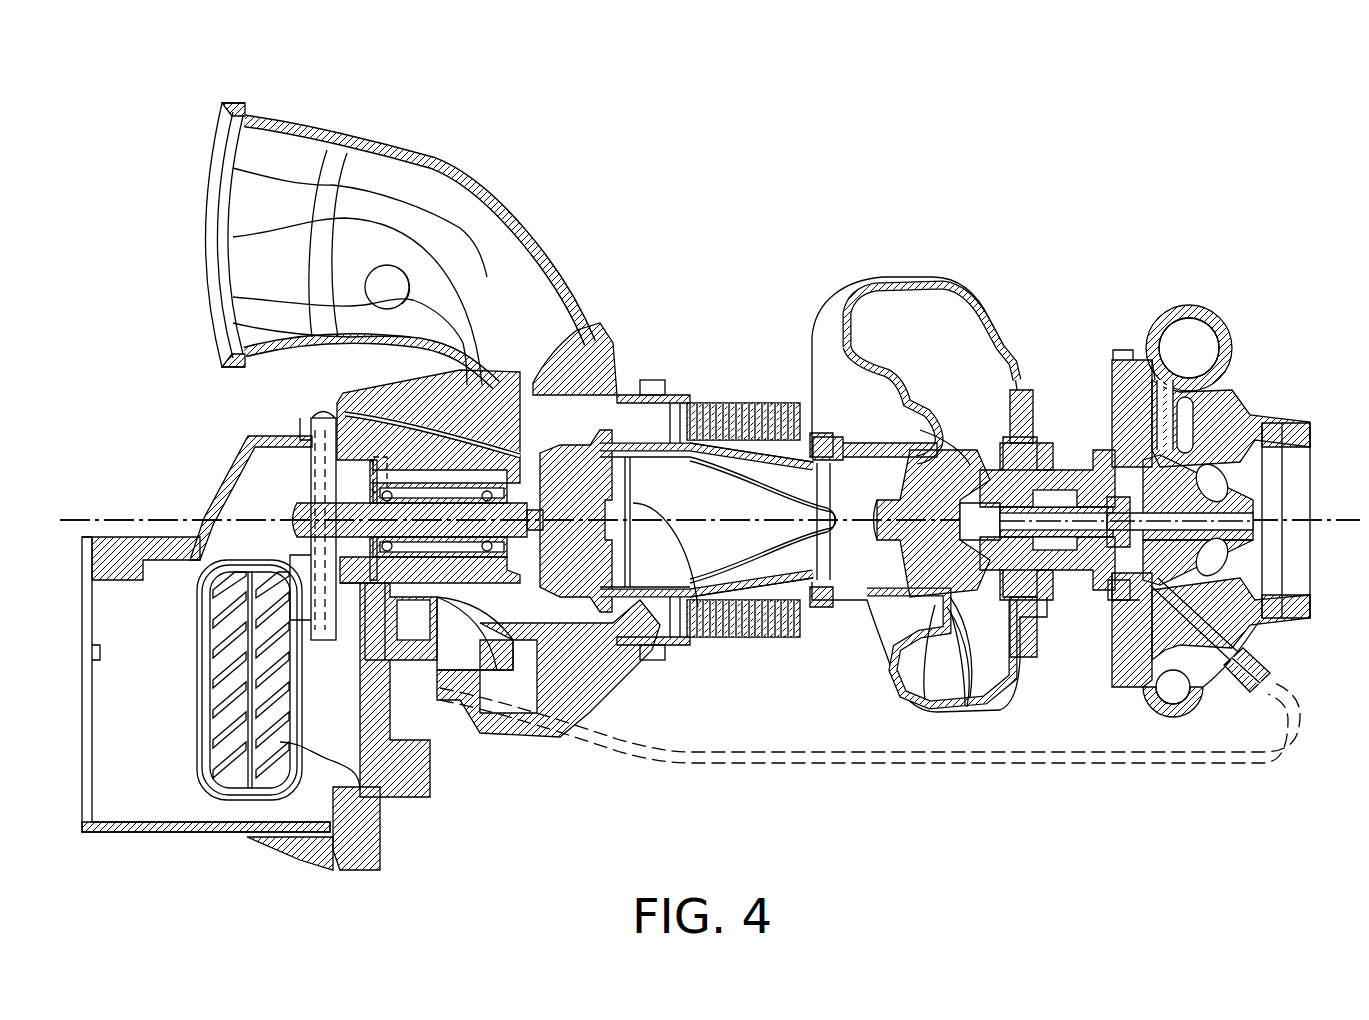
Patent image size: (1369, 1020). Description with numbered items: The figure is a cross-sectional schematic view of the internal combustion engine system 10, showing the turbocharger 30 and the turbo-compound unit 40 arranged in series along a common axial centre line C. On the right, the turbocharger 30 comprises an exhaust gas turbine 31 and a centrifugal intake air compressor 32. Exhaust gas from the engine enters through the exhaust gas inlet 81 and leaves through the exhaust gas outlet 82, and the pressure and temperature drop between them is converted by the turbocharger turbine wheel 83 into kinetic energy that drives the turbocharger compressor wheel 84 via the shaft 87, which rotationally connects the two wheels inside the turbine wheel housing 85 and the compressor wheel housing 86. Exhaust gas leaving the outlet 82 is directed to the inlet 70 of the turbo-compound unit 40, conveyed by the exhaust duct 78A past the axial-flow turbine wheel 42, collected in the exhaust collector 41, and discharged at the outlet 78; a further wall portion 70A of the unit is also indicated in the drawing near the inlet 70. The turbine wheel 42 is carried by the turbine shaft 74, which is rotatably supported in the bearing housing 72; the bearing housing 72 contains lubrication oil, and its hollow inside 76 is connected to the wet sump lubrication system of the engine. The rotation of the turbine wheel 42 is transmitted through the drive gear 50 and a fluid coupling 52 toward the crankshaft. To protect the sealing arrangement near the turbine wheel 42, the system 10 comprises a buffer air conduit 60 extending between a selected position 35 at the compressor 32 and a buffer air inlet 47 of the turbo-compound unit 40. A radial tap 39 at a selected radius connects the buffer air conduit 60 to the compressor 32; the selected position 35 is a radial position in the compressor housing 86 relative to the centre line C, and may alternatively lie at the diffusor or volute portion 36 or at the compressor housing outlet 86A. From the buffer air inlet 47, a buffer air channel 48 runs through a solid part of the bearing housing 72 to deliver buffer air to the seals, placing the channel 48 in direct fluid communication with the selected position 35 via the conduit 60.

The ICE system 10 is at (138, 110).
The turbocharger 30 is at (1268, 236).
The turbine 31 is at (1055, 512).
The compressor 32 is at (1272, 375).
The selected position 35 is at (1250, 638).
The diffusor (volute portion) 36 is at (1193, 348).
The radial tap 39 is at (1265, 663).
The turbo-compound unit 40 is at (718, 238).
The exhaust collector 41 is at (715, 690).
The turbine wheel 42 is at (755, 690).
The buffer air inlet 47 is at (330, 415).
The buffer air channel 48 is at (463, 383).
The reduction gear (drive gear) 50 is at (348, 862).
The fluid coupling 52 is at (235, 800).
The buffer air conduit 60 is at (310, 430).
The inlet 70 is at (697, 445).
The exhaust housing wall 70A is at (760, 480).
The bearing housing 72 is at (480, 388).
The turbine shaft 74 is at (517, 390).
The hollow inside 76 is at (148, 740).
The outlet 78 is at (183, 244).
The exhaust duct 78A is at (590, 340).
The exhaust gas inlet 81 is at (937, 440).
The exhaust gas outlet 82 is at (877, 457).
The turbocharger turbine wheel 83 is at (930, 337).
The turbocharger compressor wheel 84 is at (1190, 503).
The turbine wheel housing 85 is at (960, 660).
The compressor wheel housing 86 is at (1137, 385).
The compressor housing outlet 86A is at (1118, 690).
The shaft 87 is at (1085, 395).
The axial centre line C is at (710, 508).